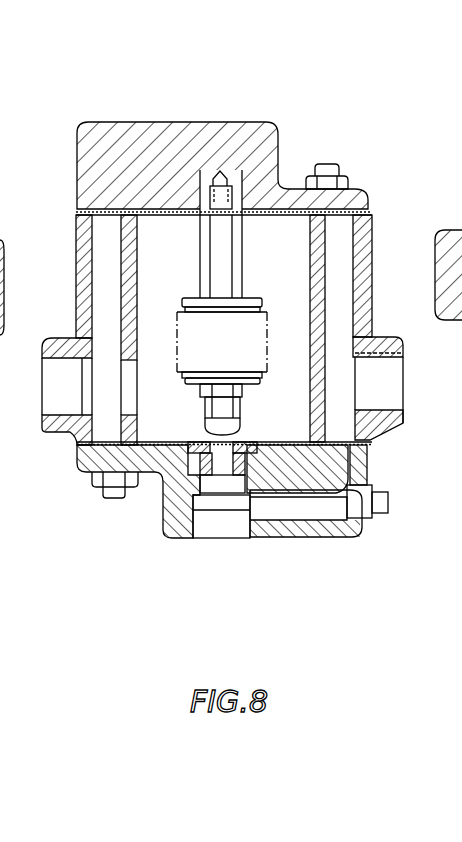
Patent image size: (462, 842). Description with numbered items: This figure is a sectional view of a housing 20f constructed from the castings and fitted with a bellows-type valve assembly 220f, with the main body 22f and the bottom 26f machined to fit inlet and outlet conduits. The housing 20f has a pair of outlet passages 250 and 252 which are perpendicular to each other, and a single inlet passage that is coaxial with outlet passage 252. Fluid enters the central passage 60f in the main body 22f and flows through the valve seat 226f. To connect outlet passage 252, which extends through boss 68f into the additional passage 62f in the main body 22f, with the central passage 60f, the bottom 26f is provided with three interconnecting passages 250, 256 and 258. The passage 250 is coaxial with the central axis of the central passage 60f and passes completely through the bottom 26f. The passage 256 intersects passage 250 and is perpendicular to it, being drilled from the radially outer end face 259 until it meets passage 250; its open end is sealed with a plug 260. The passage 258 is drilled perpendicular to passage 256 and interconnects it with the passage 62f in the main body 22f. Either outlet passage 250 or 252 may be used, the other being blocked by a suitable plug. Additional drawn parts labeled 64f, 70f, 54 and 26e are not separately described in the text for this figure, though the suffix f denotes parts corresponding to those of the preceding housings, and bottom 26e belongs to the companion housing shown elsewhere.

The housing 20f is at (201, 98).
The main body 22f is at (368, 217).
The outer cylinder wall 64f is at (96, 253).
The central passage 60f is at (308, 254).
The additional passage 62f is at (350, 247).
The bellows-type valve assembly 220f is at (165, 307).
The flange 70f is at (60, 340).
The boss 68f is at (414, 305).
The outlet passage 252 is at (402, 403).
The passage 258 is at (376, 443).
The radially outer end face 259 is at (350, 450).
The piston bore 54 is at (58, 404).
The valve seat 226f is at (224, 440).
The outlet passage 250 is at (200, 512).
The passage 256 is at (272, 523).
The bottom 26f is at (328, 530).
The plug 260 is at (365, 510).
The nut 26e is at (71, 524).